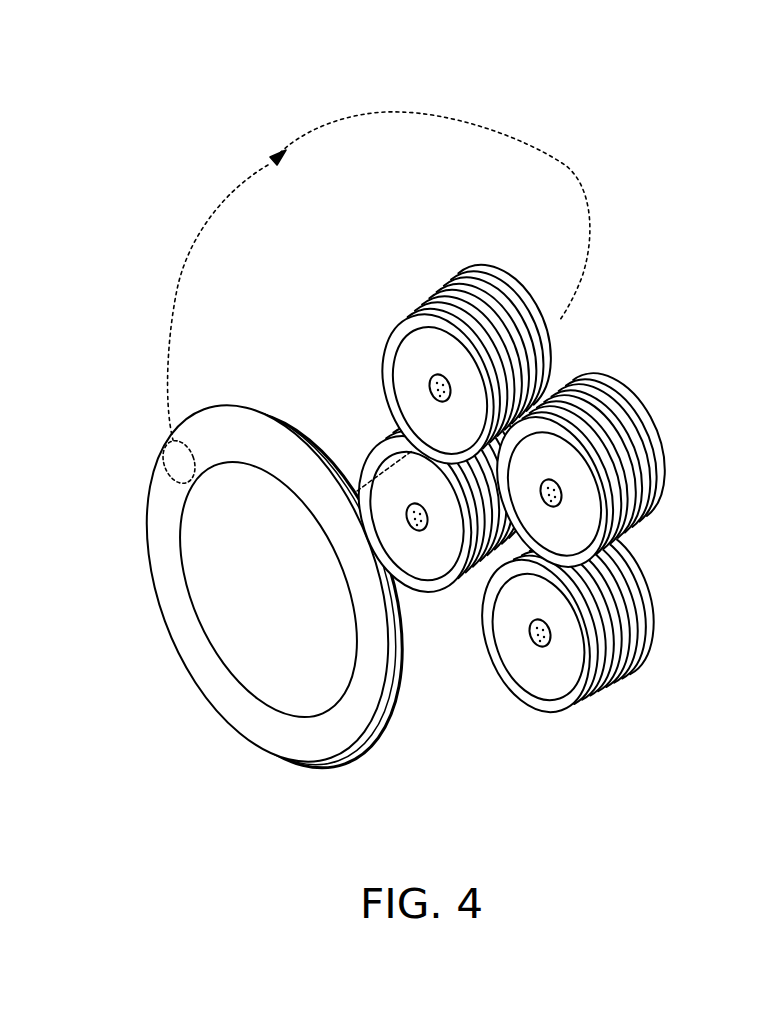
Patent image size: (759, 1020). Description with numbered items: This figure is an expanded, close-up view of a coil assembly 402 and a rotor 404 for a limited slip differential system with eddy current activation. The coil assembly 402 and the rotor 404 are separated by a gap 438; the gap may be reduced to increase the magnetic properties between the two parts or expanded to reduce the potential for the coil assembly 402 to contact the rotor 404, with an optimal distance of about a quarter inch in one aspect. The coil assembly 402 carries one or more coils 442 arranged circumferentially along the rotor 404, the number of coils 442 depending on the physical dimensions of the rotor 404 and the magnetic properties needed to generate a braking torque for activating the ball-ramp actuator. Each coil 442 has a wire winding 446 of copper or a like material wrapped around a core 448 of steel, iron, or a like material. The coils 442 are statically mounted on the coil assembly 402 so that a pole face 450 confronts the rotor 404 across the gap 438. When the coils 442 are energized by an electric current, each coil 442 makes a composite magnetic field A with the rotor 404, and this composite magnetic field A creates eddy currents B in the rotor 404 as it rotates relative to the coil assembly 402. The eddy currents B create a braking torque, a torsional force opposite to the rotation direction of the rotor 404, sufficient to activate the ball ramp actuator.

The coil assembly 402 is at (584, 348).
The rotor 404 is at (186, 650).
The gap 438 is at (438, 653).
The coils 442 is at (518, 471).
The wire winding 446 is at (622, 571).
The core 448 is at (543, 650).
The pole face 450 is at (436, 346).
The composite magnetic field A is at (290, 135).
The eddy currents B is at (162, 447).